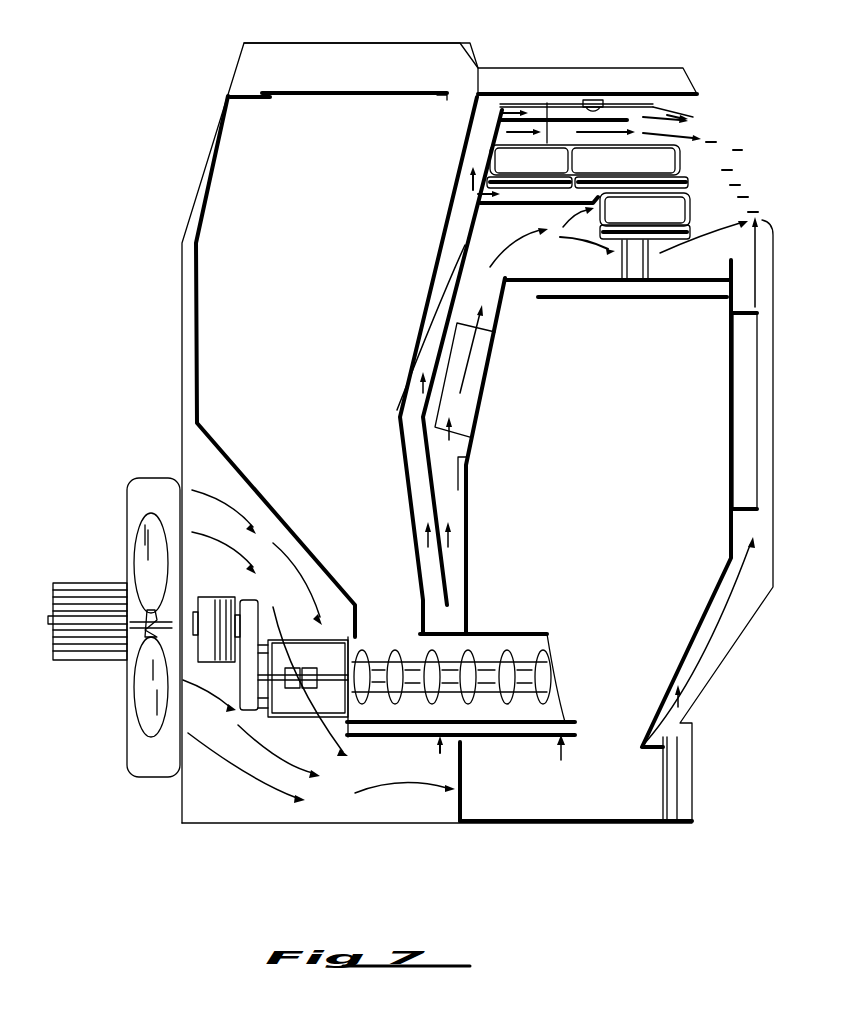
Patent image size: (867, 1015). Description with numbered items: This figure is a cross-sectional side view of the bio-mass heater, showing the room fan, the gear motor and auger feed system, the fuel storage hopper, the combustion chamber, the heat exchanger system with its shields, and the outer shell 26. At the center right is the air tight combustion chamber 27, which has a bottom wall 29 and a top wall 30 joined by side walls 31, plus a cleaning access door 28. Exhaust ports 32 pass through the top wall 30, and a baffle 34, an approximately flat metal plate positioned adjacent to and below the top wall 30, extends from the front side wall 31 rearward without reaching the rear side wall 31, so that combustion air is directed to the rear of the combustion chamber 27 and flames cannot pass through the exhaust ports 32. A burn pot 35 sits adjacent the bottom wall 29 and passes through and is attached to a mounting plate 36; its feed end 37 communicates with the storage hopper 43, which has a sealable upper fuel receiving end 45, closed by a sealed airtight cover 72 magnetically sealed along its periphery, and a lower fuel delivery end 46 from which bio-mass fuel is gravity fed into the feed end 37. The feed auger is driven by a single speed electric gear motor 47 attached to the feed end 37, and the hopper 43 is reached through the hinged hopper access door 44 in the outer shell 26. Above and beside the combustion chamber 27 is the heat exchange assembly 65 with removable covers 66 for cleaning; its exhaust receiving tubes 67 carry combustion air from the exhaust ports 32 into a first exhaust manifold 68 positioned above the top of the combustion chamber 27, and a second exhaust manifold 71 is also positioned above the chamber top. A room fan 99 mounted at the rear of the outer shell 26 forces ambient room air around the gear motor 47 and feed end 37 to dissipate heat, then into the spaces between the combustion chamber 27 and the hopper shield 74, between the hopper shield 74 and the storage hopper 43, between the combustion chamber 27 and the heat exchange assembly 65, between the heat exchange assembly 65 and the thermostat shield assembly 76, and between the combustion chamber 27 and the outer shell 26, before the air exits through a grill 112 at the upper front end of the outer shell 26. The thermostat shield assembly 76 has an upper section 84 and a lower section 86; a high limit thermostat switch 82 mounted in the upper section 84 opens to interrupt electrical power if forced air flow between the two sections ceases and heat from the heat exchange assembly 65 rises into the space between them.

The outer shell 26 is at (745, 630).
The combustion chamber 27 is at (575, 501).
The cleaning access door 28 is at (680, 786).
The bottom wall 29 is at (540, 825).
The top wall 30 is at (525, 283).
The side walls 31 is at (483, 380).
The exhaust ports 32 is at (640, 263).
The baffle 34 is at (590, 300).
The burn pot 35 is at (568, 759).
The mounting plate 36 is at (457, 767).
The feed end 37 is at (332, 733).
The storage hopper 43 is at (352, 193).
The hopper access door 44 is at (462, 45).
The upper fuel receiving end 45 is at (232, 90).
The lower fuel delivery end 46 is at (370, 638).
The gear motor 47 is at (205, 597).
The heat exchange assembly 65 is at (705, 220).
The removable covers 66 is at (690, 203).
The exhaust receiving tubes 67 is at (613, 258).
The first exhaust manifold 68 is at (645, 209).
The second exhaust manifold 71 is at (585, 160).
The cover 72 is at (318, 90).
The hopper shield 74 is at (478, 250).
The thermostat shield assembly 76 is at (517, 104).
The high limit thermostat switch 82 is at (591, 100).
The upper section 84 is at (605, 94).
The lower section 86 is at (547, 103).
The room fan 99 is at (127, 770).
The grill 112 is at (692, 133).